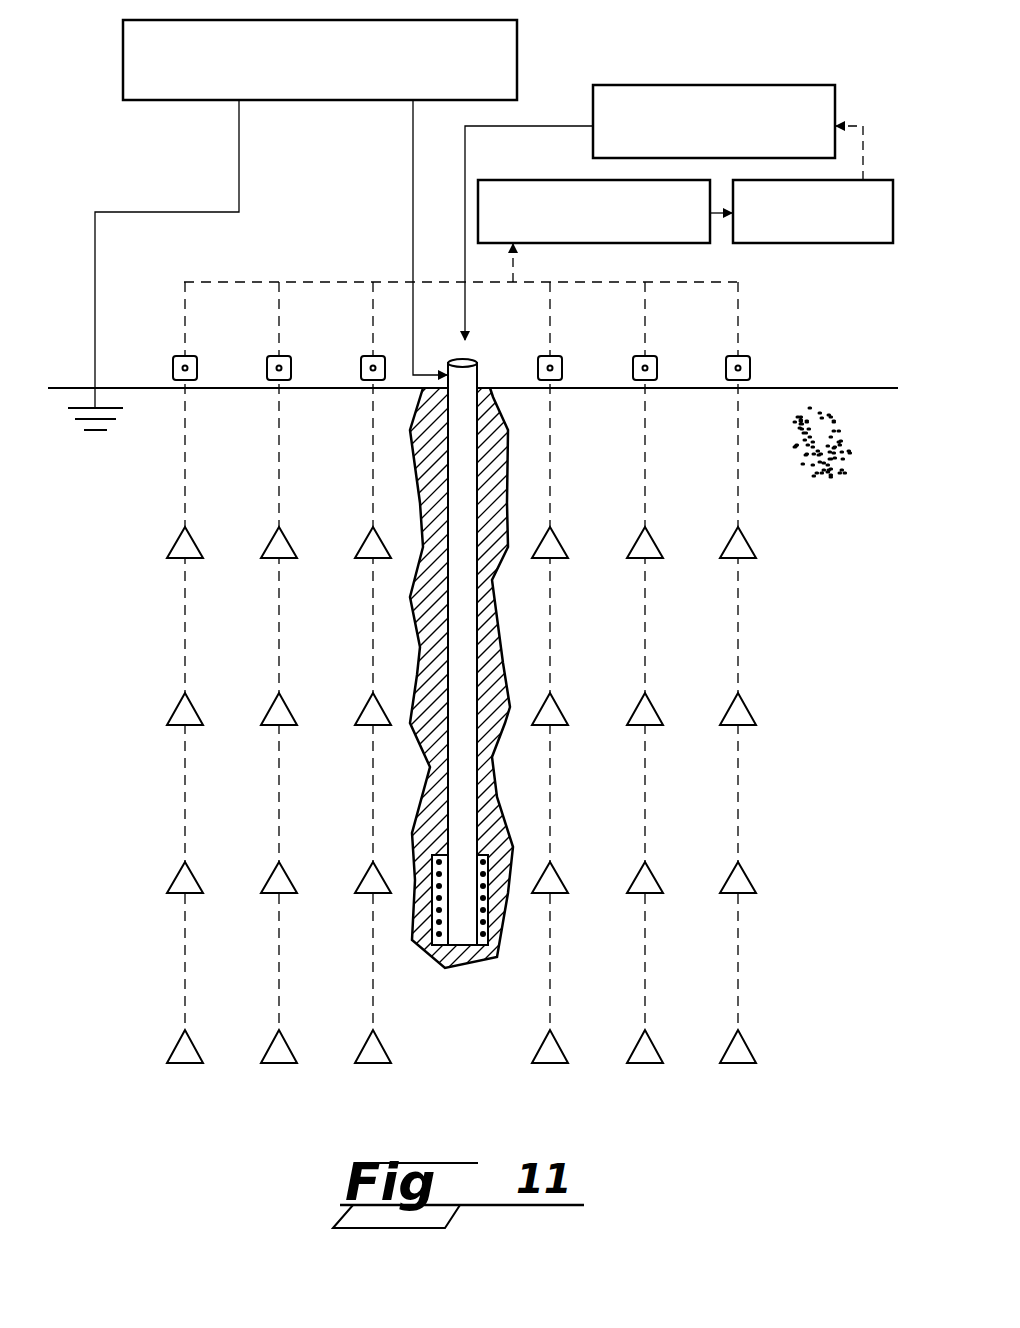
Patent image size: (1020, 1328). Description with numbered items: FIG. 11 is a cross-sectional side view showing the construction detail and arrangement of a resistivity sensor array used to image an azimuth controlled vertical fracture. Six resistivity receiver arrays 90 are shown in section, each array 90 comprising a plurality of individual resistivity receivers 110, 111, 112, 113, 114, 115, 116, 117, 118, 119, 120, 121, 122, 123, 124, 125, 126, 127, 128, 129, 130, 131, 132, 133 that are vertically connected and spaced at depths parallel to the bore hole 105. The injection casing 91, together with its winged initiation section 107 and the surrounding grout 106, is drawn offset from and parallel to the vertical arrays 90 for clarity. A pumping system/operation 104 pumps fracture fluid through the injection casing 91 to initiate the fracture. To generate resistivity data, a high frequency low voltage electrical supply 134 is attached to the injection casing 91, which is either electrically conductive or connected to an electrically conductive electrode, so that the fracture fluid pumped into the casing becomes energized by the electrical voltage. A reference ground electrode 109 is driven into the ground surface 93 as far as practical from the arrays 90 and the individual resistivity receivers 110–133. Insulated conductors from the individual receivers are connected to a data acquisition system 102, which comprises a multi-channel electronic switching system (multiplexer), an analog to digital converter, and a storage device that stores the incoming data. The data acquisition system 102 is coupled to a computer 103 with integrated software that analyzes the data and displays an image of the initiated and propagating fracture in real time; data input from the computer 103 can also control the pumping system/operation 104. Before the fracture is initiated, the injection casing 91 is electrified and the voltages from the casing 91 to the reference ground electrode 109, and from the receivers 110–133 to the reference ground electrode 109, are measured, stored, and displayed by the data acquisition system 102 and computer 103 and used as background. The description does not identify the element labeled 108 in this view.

The resistivity receiver array 90 is at (172, 370).
The injection casing 91 is at (478, 362).
The ground surface 93 is at (820, 443).
The data acquisition system 102 is at (553, 180).
The computer 103 is at (800, 243).
The pumping system/operation 104 is at (713, 85).
The bore hole 105 is at (506, 495).
The grout 106 is at (497, 668).
The winged initiation section 107 is at (488, 908).
The electrode network connection 108 is at (230, 282).
The reference ground electrode 109 is at (95, 435).
The individual resistivity receiver 110 is at (175, 540).
The individual resistivity receiver 111 is at (264, 554).
The individual resistivity receiver 112 is at (358, 554).
The individual resistivity receiver 113 is at (565, 554).
The individual resistivity receiver 114 is at (660, 554).
The individual resistivity receiver 115 is at (753, 554).
The individual resistivity receiver 116 is at (170, 720).
The individual resistivity receiver 117 is at (264, 720).
The individual resistivity receiver 118 is at (358, 720).
The individual resistivity receiver 119 is at (565, 713).
The individual resistivity receiver 120 is at (660, 713).
The individual resistivity receiver 121 is at (754, 708).
The individual resistivity receiver 122 is at (170, 888).
The individual resistivity receiver 123 is at (264, 888).
The individual resistivity receiver 124 is at (358, 888).
The individual resistivity receiver 125 is at (565, 880).
The individual resistivity receiver 126 is at (660, 883).
The individual resistivity receiver 127 is at (753, 880).
The individual resistivity receiver 128 is at (170, 1058).
The individual resistivity receiver 129 is at (264, 1050).
The individual resistivity receiver 130 is at (358, 1050).
The individual resistivity receiver 131 is at (565, 1045).
The individual resistivity receiver 132 is at (660, 1045).
The individual resistivity receiver 133 is at (753, 1045).
The high frequency low voltage electrical supply 134 is at (123, 75).